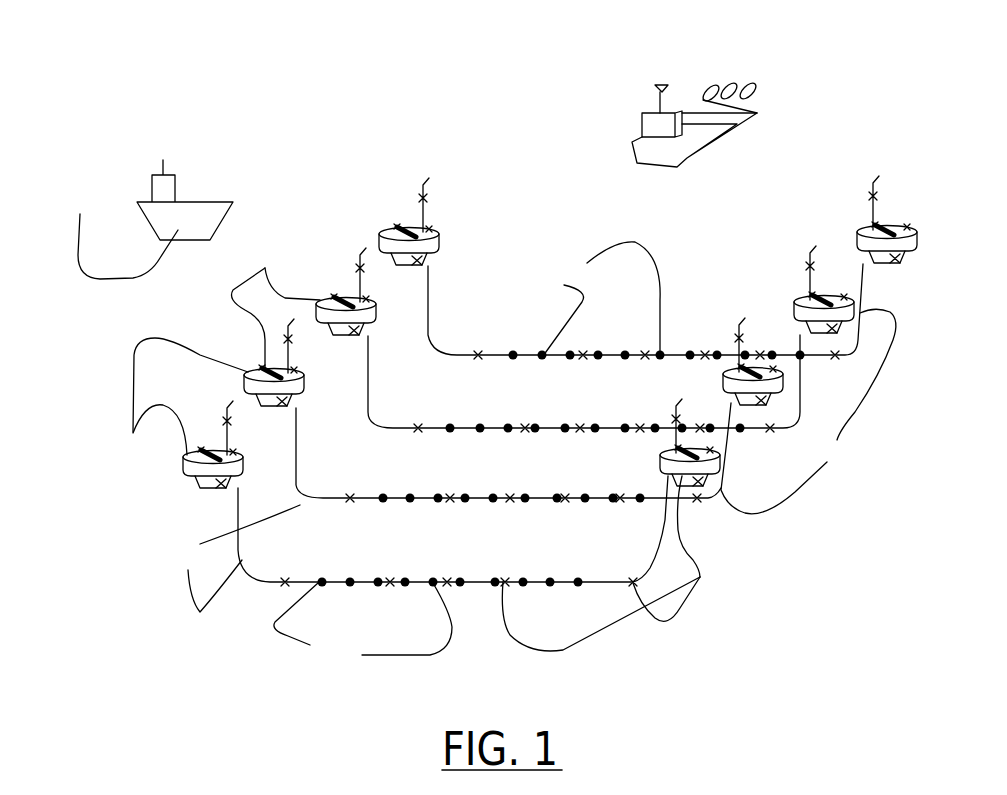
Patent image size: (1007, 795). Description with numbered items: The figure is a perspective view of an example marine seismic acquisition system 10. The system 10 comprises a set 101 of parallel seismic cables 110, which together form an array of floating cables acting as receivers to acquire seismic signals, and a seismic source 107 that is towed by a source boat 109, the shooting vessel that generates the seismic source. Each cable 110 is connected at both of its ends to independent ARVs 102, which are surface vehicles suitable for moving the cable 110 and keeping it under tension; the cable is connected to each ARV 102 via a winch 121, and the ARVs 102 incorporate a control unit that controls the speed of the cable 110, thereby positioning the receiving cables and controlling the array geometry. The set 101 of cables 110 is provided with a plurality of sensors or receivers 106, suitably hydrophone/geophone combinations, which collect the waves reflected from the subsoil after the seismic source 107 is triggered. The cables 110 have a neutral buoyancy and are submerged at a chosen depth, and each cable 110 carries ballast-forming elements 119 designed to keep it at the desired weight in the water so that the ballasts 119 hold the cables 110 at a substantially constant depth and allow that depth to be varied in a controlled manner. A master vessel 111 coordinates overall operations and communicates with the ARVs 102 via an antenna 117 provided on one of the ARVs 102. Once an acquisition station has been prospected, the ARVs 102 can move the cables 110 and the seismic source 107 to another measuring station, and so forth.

The marine seismic acquisition system 10 is at (183, 64).
The set of parallel seismic cables 101 is at (480, 628).
The ARV 102 is at (499, 389).
The sensors/receivers 106 is at (568, 454).
The seismic source 107 is at (752, 73).
The source boat 109 is at (653, 153).
The seismic cable 110 is at (225, 558).
The master vessel 111 is at (146, 219).
The antenna 117 is at (276, 298).
The ballast-forming elements 119 is at (697, 589).
The winch 121 is at (218, 462).